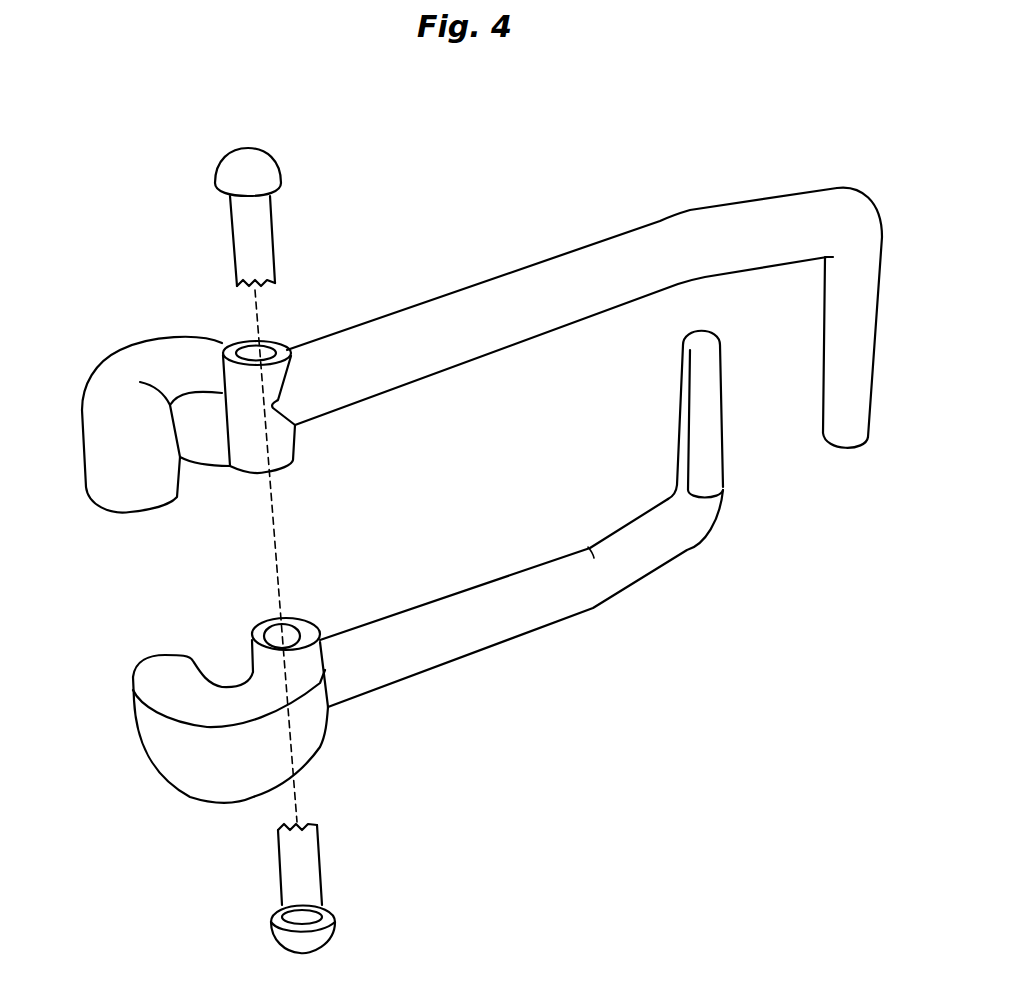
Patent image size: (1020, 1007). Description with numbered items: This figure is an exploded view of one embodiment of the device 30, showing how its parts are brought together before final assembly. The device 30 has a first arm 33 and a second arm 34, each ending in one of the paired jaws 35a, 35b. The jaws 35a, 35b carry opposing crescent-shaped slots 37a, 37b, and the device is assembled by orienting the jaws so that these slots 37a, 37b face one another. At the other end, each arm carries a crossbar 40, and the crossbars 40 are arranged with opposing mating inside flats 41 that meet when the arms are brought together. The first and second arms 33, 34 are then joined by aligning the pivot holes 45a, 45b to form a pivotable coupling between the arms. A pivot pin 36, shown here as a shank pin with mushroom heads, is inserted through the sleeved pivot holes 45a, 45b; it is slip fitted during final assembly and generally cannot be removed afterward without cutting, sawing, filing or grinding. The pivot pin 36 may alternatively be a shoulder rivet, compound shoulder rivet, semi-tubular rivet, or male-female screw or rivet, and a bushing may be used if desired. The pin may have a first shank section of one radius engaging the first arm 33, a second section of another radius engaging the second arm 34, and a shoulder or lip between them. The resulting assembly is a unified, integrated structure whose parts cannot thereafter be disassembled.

The clamp / holder assembly 30 is at (566, 862).
The first arm 33 is at (514, 267).
The second arm 34 is at (595, 607).
The jaw 35a is at (92, 378).
The jaw 35b is at (208, 800).
The pivot pin 36 is at (263, 150).
The crescent-shaped slot 37a is at (203, 467).
The crescent-shaped slot 37b is at (222, 668).
The crossbar 40 is at (873, 367).
The inside flat 41 is at (710, 395).
The pivot hole 45a is at (282, 438).
The pivot hole 45b is at (302, 623).